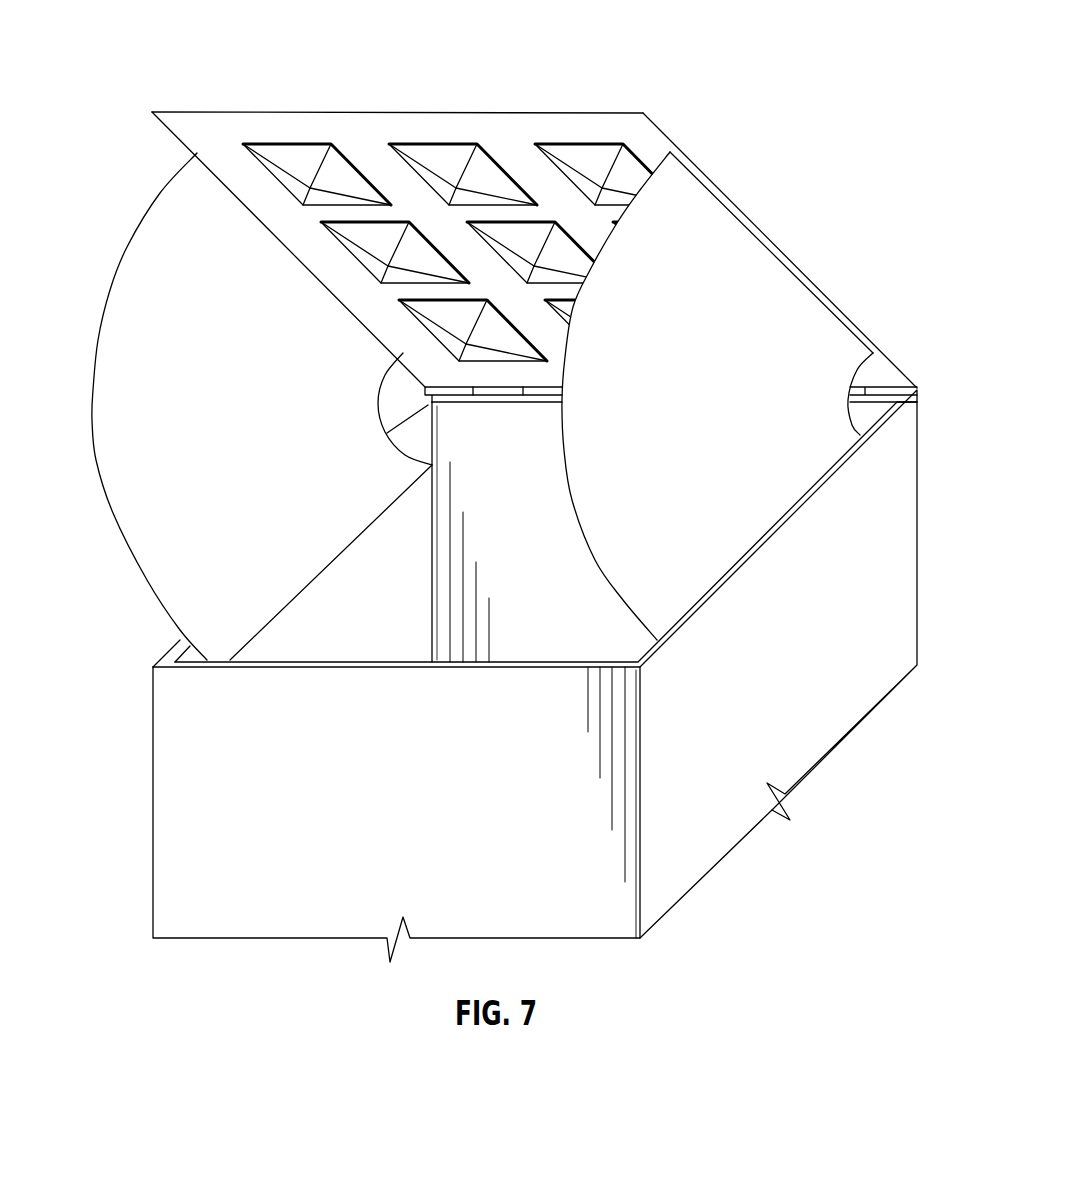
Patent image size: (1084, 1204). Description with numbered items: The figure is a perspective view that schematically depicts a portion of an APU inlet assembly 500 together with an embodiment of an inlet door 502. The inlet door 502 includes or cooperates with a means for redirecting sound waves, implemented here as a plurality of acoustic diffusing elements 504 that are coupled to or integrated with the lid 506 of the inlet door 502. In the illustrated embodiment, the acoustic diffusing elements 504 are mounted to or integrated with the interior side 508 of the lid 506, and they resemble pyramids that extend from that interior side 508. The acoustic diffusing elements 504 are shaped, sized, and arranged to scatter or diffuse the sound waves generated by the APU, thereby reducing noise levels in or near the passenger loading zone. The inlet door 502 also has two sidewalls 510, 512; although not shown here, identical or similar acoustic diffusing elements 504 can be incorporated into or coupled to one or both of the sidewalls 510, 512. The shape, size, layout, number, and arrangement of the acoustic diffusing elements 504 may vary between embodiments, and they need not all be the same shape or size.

The APU inlet assembly 500 is at (872, 744).
The inlet door 502 is at (511, 220).
The acoustic diffusing elements 504 is at (466, 142).
The lid 506 is at (313, 111).
The interior side 508 is at (199, 120).
The sidewall 510 is at (127, 247).
The sidewall 512 is at (592, 547).